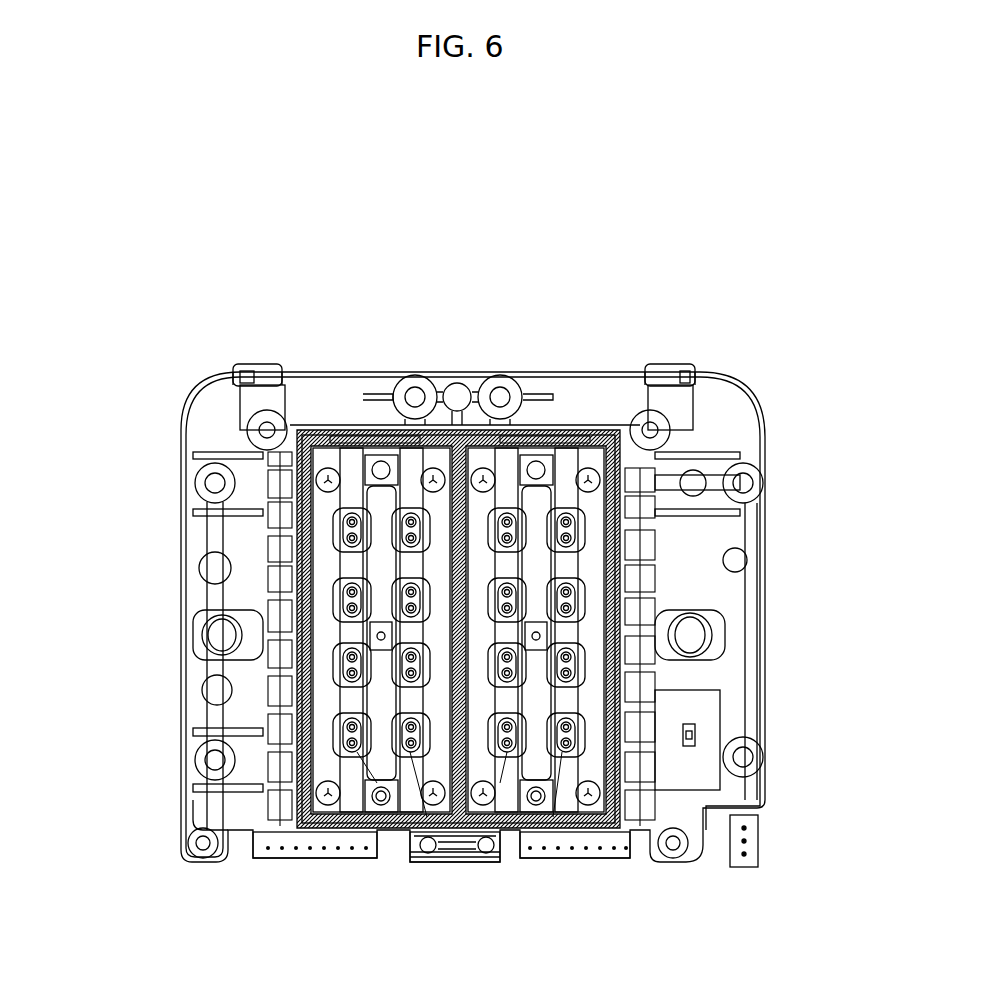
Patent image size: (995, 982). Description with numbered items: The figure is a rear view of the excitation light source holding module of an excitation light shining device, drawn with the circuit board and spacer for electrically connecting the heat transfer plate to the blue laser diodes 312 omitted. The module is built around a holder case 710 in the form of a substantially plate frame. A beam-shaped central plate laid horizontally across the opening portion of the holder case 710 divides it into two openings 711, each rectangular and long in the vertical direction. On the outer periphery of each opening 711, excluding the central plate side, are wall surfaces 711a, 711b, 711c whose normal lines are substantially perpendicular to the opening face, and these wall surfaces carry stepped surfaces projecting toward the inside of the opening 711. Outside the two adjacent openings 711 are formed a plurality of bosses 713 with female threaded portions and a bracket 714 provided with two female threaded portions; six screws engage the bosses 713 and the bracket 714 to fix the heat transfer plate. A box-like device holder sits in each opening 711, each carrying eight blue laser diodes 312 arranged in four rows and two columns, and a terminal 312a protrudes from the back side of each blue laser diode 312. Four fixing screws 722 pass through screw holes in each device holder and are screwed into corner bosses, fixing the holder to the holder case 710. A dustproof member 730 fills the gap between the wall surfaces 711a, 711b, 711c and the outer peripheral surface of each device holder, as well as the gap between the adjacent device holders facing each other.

The holder case 710 is at (197, 390).
The opening 711 is at (323, 432).
The wall surface 711a is at (360, 810).
The wall surface 711b is at (300, 625).
The wall surface 711c is at (550, 457).
The boss 713 is at (278, 420).
The bracket 714 is at (413, 868).
The fixing screw 722 is at (323, 798).
The dustproof member 730 is at (513, 430).
The terminal 312a is at (485, 862).
The blue laser diode 312 is at (455, 908).